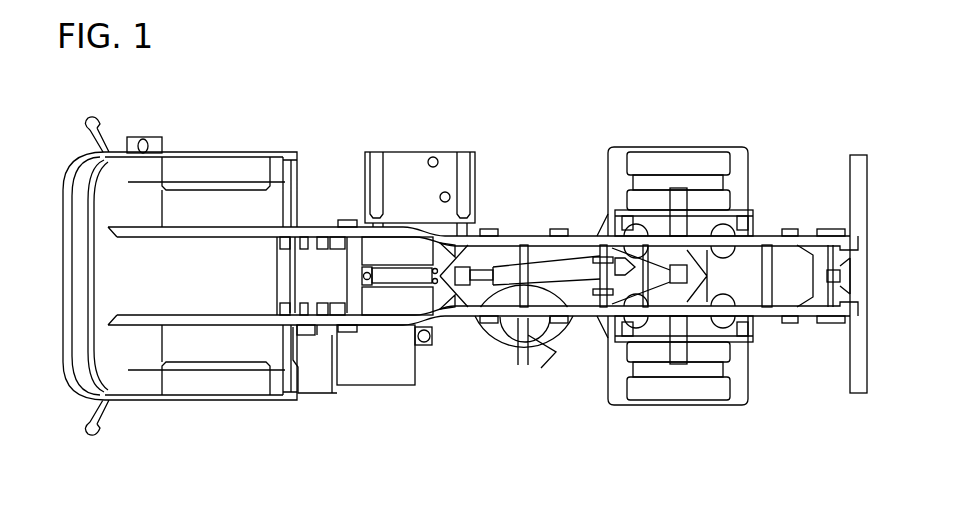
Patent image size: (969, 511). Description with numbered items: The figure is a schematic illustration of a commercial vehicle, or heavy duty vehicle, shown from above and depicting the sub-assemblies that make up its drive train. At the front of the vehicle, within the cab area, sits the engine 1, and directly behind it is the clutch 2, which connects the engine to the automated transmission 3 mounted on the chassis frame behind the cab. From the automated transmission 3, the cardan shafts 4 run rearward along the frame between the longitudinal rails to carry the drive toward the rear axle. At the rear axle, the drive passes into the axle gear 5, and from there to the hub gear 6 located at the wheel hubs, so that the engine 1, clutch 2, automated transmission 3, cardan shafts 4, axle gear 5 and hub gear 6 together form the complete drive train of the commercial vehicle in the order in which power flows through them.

The engine 1 is at (216, 272).
The clutch 2 is at (292, 258).
The automated transmission 3 is at (317, 283).
The cardan shafts 4 is at (402, 270).
The axle gear 5 is at (662, 250).
The hub gear 6 is at (675, 370).